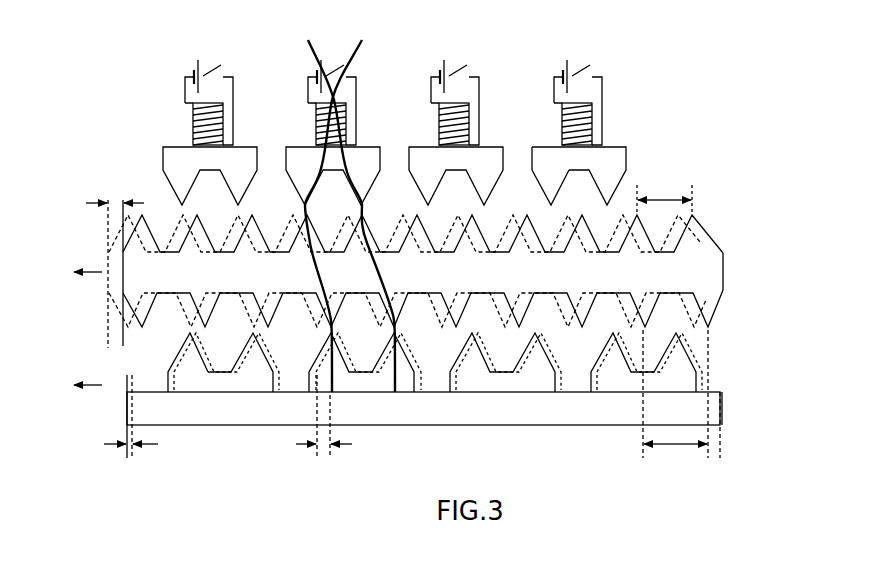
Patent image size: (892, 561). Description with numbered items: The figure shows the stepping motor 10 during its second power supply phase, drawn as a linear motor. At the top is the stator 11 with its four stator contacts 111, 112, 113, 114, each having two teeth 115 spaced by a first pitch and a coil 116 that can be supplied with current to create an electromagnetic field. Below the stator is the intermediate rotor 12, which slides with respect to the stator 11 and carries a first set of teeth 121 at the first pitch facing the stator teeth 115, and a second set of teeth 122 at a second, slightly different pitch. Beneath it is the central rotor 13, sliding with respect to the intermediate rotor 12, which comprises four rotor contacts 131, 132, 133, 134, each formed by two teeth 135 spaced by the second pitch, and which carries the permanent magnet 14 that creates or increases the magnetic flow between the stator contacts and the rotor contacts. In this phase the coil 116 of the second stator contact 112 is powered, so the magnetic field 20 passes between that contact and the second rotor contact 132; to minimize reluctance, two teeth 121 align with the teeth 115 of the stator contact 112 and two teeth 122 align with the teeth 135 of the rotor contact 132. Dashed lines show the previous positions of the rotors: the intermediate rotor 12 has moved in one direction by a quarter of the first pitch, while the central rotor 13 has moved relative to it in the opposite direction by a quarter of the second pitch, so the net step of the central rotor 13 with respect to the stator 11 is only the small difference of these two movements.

The stepping motor 10 is at (733, 109).
The stator 11 is at (697, 90).
The first stator contact 111 is at (170, 136).
The second stator contact 112 is at (385, 108).
The third stator contact 113 is at (513, 108).
The fourth stator contact 114 is at (643, 108).
The stator contact teeth 115 is at (549, 203).
The coil 116 is at (318, 126).
The intermediate rotor 12 is at (724, 272).
The first set of teeth 121 is at (708, 233).
The second set of teeth 122 is at (718, 312).
The central rotor 13 is at (724, 342).
The first rotor contact 131 is at (226, 360).
The second rotor contact 132 is at (363, 360).
The third rotor contact 133 is at (496, 360).
The fourth rotor contact 134 is at (594, 360).
The rotor contact teeth 135 is at (173, 360).
The permanent magnet 14 is at (582, 424).
The magnetic field 20 is at (312, 52).